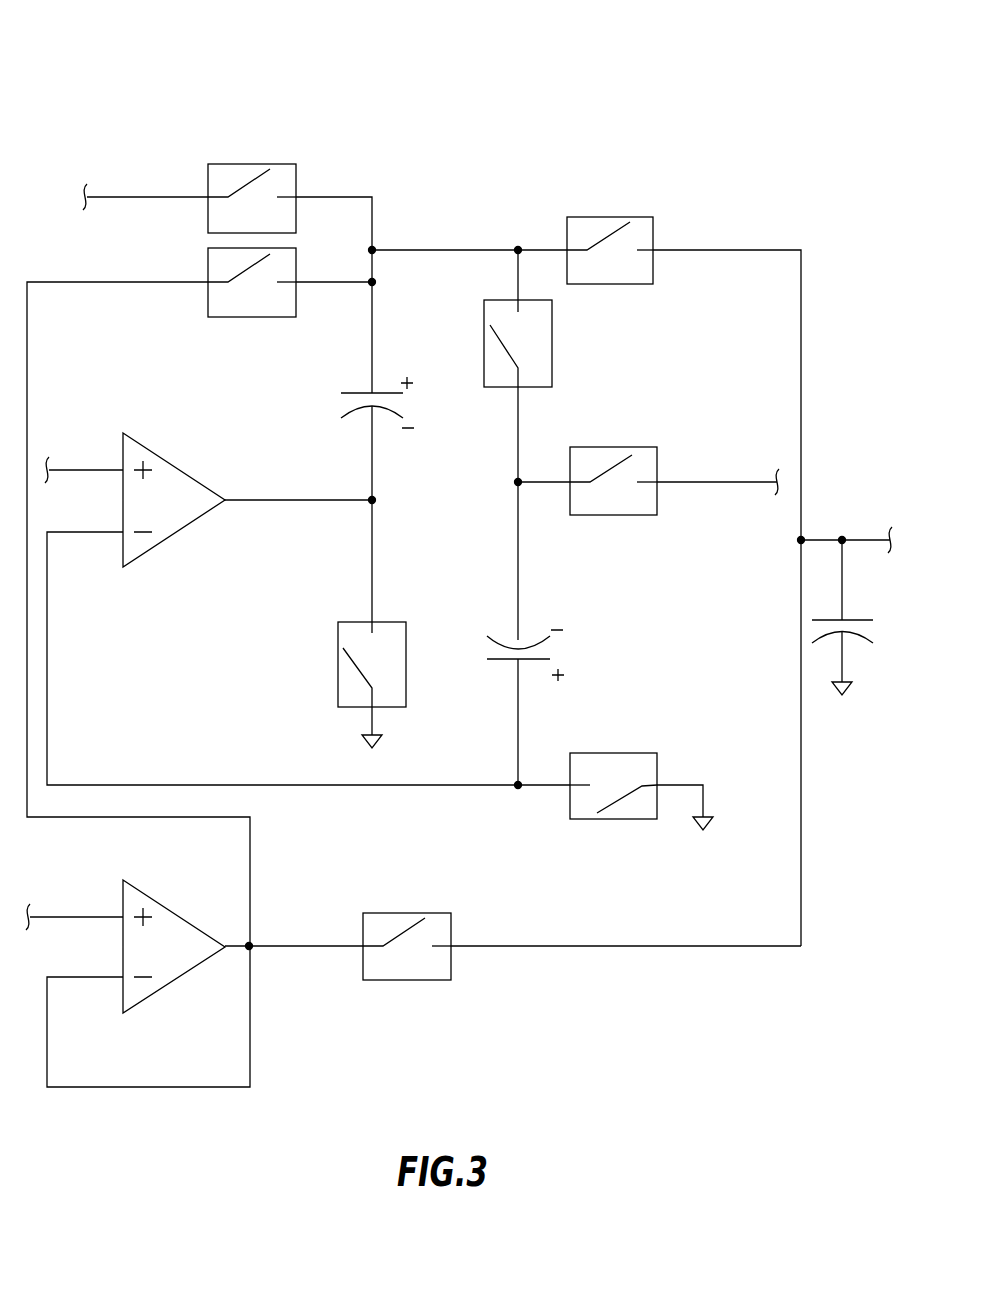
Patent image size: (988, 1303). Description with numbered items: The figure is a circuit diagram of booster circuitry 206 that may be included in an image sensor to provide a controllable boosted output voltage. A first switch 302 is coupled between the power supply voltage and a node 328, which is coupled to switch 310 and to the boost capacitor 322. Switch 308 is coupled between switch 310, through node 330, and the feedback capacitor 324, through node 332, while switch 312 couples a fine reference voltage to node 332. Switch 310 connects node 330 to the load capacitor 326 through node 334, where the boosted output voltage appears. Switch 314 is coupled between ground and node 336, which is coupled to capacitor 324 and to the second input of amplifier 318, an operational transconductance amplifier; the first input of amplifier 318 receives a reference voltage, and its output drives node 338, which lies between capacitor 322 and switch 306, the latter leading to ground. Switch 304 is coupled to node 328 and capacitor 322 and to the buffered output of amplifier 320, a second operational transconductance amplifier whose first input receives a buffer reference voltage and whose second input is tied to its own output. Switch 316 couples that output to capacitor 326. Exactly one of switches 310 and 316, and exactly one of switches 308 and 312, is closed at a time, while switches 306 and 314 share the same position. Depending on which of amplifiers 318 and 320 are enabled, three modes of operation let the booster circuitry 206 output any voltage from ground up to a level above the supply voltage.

The booster circuitry 206 is at (787, 145).
The first switch 302 is at (296, 177).
The switch 304 is at (209, 317).
The switch 306 is at (406, 680).
The switch 308 is at (552, 360).
The switch 310 is at (655, 213).
The switch 312 is at (652, 435).
The switch 314 is at (620, 819).
The switch 316 is at (432, 980).
The amplifier 318 is at (175, 462).
The amplifier 320 is at (168, 905).
The capacitor 322 is at (352, 380).
The capacitor 324 is at (568, 652).
The capacitor 326 is at (880, 648).
The node 328 is at (372, 250).
The node 330 is at (518, 250).
The node 332 is at (518, 482).
The node 334 is at (842, 540).
The node 336 is at (518, 785).
The node 338 is at (372, 500).